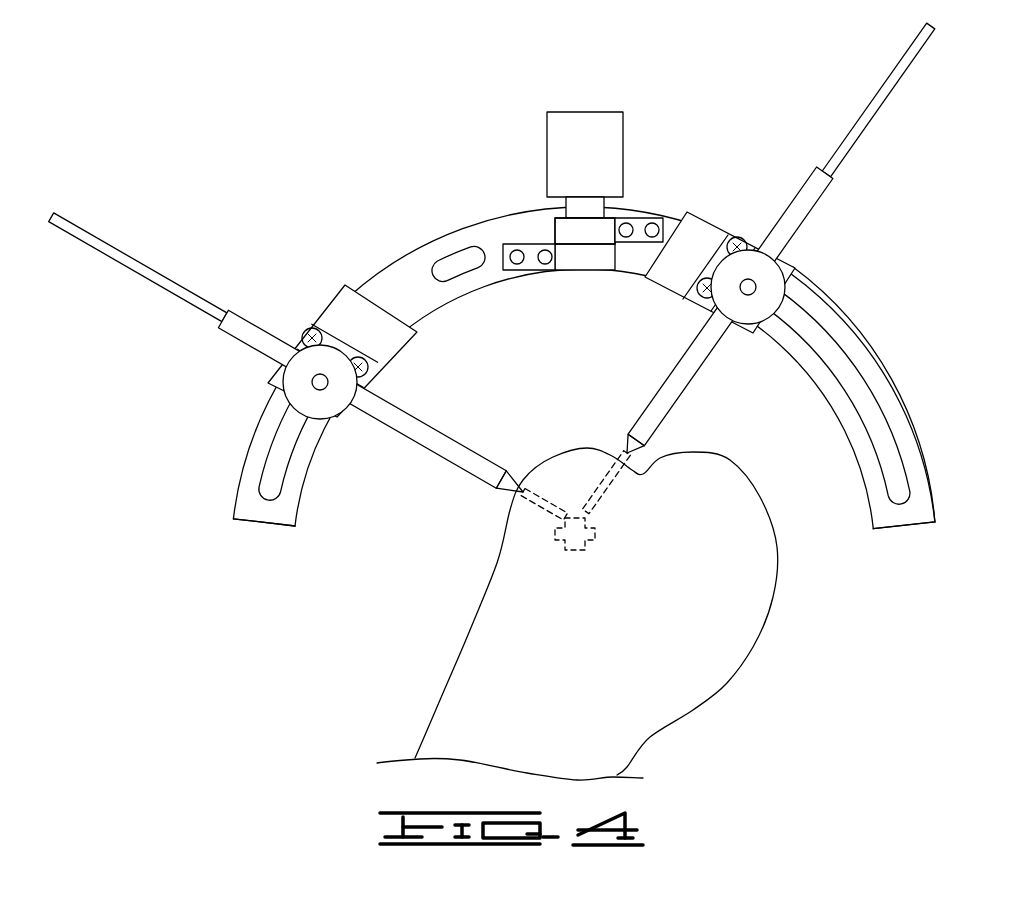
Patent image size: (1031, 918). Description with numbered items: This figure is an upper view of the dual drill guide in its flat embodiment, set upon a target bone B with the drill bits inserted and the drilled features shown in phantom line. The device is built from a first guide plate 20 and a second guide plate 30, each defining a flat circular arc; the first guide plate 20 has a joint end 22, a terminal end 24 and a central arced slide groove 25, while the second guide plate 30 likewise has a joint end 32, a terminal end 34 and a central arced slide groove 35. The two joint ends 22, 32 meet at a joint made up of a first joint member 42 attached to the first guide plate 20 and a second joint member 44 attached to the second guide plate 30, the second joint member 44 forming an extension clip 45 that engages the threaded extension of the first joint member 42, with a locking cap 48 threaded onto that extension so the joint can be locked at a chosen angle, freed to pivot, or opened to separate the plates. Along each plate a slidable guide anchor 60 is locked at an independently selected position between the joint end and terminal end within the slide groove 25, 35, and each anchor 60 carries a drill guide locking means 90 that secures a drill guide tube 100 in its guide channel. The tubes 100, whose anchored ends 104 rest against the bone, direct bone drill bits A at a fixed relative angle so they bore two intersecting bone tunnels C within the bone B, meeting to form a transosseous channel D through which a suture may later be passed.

The first guide plate 20 is at (381, 268).
The joint end 22 is at (513, 273).
The terminal end 24 is at (262, 537).
The central arced slide groove 25 is at (420, 283).
The second guide plate 30 is at (867, 347).
The joint end 32 is at (628, 212).
The terminal end 34 is at (908, 535).
The central arced slide groove 35 is at (887, 440).
The first joint member 42 is at (580, 263).
The second joint member 44 is at (640, 223).
The extension clip 45 is at (560, 228).
The locking cap 48 is at (608, 153).
The slidable guide anchor 60 is at (341, 312).
The drill guide locking means 90 is at (270, 383).
The drill guide tube 100 is at (234, 328).
The instrument tip 104 is at (512, 483).
The bone drill bit A is at (510, 523).
The bone B is at (703, 673).
The bone tunnel C is at (622, 500).
The transosseous channel D is at (575, 540).